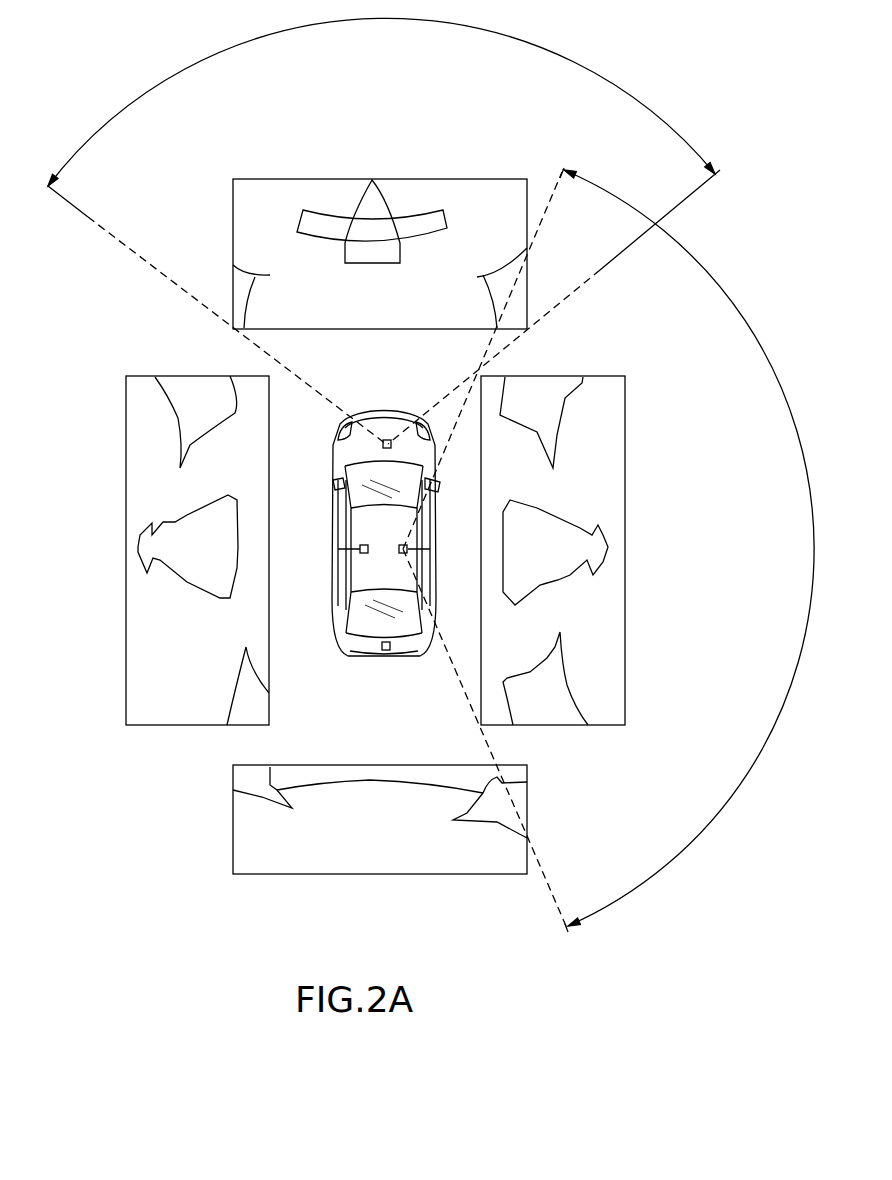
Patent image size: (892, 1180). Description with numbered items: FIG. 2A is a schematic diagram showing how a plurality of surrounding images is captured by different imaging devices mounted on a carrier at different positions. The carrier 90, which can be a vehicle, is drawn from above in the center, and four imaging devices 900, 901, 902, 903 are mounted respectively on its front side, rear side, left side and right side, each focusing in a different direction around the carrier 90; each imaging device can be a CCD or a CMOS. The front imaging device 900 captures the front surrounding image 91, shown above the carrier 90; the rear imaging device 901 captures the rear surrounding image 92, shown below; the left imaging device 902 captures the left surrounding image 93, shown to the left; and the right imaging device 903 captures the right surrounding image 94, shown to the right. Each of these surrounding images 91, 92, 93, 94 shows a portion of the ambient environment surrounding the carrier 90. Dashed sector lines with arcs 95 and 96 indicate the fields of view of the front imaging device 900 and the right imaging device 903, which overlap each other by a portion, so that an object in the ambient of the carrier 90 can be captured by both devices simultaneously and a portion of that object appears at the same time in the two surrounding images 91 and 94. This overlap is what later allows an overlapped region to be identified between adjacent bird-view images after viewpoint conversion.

The carrier 90 is at (333, 406).
The front imaging device 900 is at (388, 439).
The rear imaging device 901 is at (386, 652).
The left imaging device 902 is at (360, 550).
The right imaging device 903 is at (408, 549).
The front surrounding image 91 is at (226, 168).
The rear surrounding image 92 is at (328, 756).
The left surrounding image 93 is at (119, 368).
The right surrounding image 94 is at (604, 380).
The front camera field of view 95 is at (402, 54).
The right side camera field of view 96 is at (791, 557).